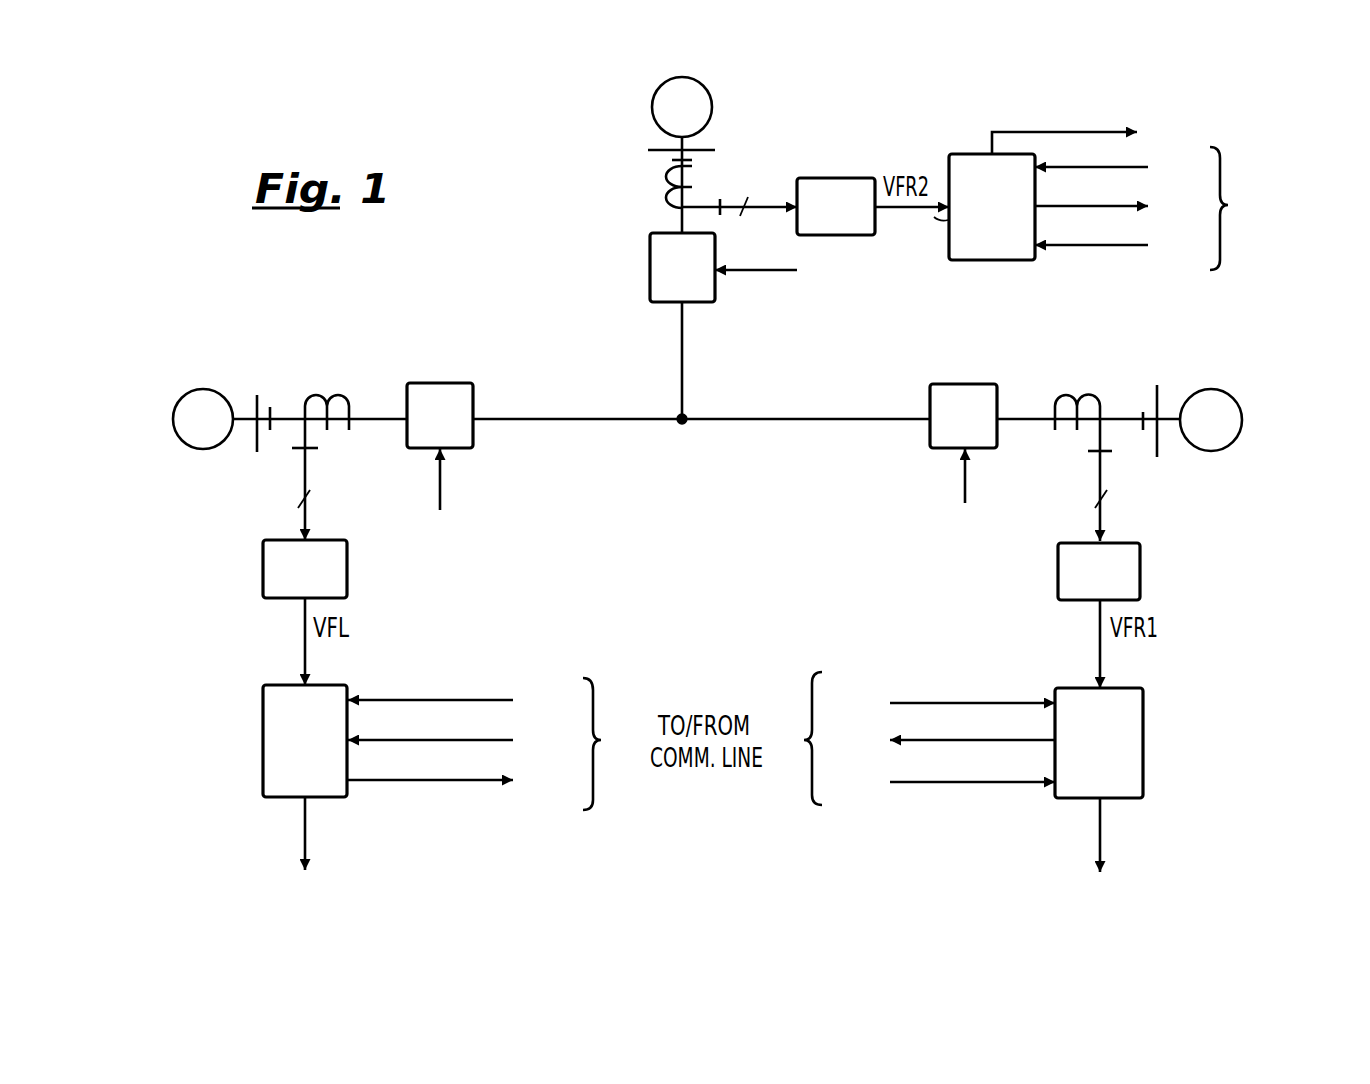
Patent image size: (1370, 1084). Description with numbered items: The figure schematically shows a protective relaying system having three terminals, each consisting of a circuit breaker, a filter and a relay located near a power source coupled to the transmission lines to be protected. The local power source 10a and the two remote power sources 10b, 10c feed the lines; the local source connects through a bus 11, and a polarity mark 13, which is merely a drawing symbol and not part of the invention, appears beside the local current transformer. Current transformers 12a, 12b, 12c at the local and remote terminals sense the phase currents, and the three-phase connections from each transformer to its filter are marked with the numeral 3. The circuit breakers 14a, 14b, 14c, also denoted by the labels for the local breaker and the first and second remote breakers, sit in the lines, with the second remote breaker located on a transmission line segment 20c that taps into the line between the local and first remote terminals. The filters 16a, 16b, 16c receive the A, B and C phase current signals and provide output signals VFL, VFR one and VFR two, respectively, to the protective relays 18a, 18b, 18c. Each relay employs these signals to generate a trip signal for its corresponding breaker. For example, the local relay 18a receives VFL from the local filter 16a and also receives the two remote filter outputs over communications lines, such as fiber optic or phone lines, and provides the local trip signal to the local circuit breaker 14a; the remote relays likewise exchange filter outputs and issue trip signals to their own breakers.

The three-phase signal lines 3 is at (711, 341).
The local power source 10a is at (190, 390).
The remote power source 10b is at (1218, 393).
The remote power source 10c is at (713, 106).
The bus 11 is at (257, 395).
The polarity mark 13 is at (272, 405).
The current transformer 12a is at (316, 395).
The current transformer 12b is at (1067, 395).
The current transformer 12c is at (666, 177).
The local circuit breaker 14a is at (455, 385).
The remote circuit breaker 14b is at (958, 390).
The remote circuit breaker 14c is at (650, 252).
The local filter 16a is at (348, 577).
The remote filter 16b is at (1142, 578).
The remote filter 16c is at (828, 180).
The local protective relay 18a is at (263, 718).
The remote protective relay 18b is at (1143, 712).
The remote protective relay 18c is at (958, 158).
The transmission line segment 20c is at (685, 370).